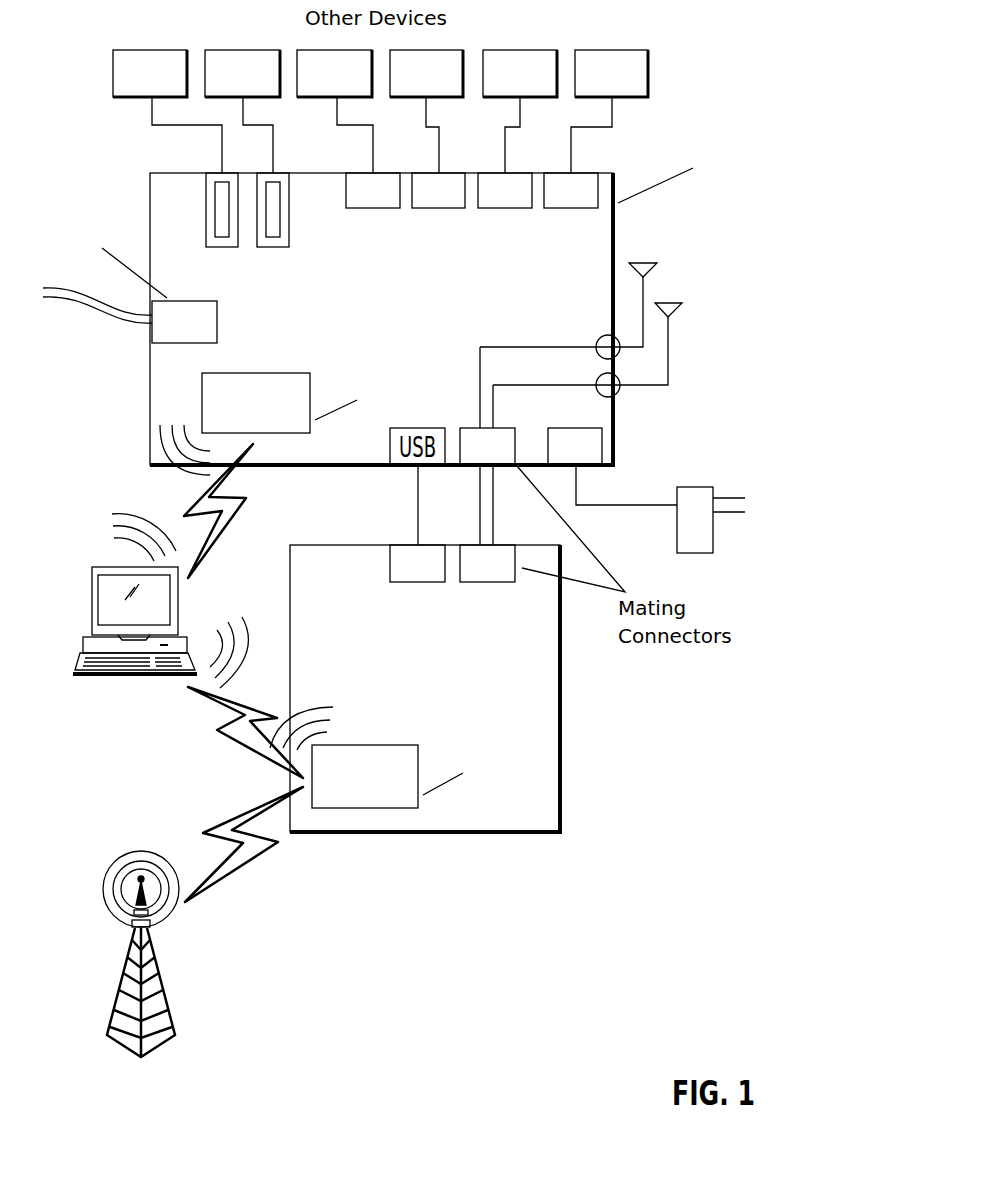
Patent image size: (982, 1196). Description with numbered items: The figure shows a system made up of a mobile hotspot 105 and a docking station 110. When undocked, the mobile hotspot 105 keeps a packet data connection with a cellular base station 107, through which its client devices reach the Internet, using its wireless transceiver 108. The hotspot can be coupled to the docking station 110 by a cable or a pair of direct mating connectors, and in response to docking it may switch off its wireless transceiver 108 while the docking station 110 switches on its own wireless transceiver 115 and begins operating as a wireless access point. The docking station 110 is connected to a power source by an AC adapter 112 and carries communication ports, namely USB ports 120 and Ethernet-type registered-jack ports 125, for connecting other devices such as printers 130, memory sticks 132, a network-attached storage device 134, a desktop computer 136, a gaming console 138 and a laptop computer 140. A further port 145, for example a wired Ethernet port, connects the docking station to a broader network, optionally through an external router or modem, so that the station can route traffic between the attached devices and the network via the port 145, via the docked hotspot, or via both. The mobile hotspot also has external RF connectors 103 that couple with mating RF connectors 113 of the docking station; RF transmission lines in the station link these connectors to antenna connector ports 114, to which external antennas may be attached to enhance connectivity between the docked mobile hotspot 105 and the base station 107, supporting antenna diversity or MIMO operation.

The external RF connectors 103 is at (512, 578).
The mobile hotspot 105 is at (452, 697).
The cellular base station 107 is at (163, 980).
The wireless transceiver 108 is at (389, 795).
The docking station 110 is at (412, 337).
The AC adapter 112 is at (638, 502).
The mating RF connectors 113 is at (512, 461).
The antenna connector ports 114 is at (596, 385).
The wireless transceiver 115 is at (280, 418).
The USB ports 120 is at (221, 247).
The RJ-45 ports 125 is at (570, 208).
The printers 130 is at (174, 87).
The memory sticks 132 is at (266, 87).
The network-attached storage device 134 is at (358, 87).
The desktop computer 136 is at (450, 87).
The gaming console 138 is at (544, 87).
The laptop computer 140 is at (636, 87).
The port 145 is at (209, 338).